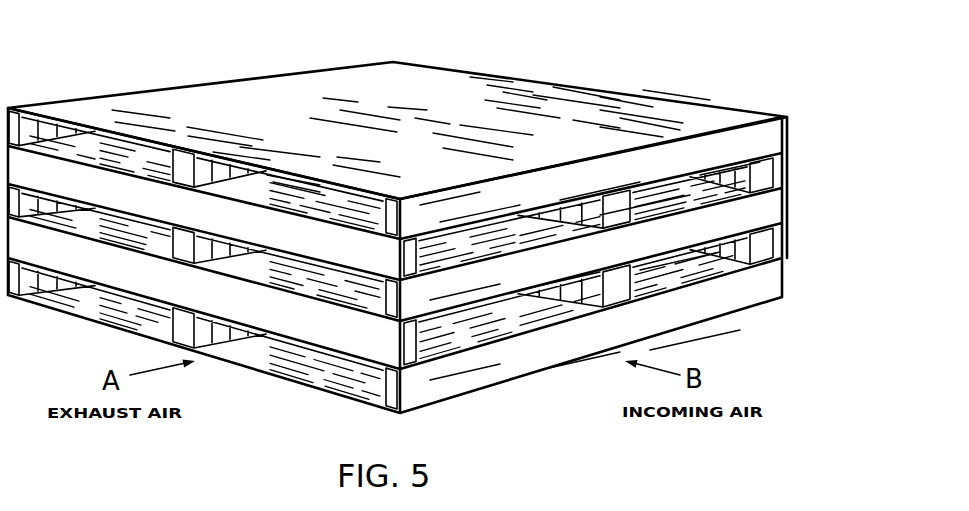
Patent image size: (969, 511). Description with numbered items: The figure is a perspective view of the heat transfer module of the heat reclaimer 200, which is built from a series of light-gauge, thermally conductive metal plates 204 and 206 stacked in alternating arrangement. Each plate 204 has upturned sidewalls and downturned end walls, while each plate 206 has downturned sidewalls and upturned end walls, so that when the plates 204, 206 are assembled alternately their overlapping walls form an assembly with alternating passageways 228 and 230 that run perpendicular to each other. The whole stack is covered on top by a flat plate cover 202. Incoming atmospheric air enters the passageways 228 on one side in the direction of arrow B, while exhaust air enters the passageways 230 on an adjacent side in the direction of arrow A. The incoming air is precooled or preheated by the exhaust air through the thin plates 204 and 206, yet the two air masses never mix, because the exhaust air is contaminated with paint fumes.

The heat reclaimer 200 is at (397, 215).
The flat plate cover 202 is at (242, 96).
The plate 204 is at (498, 236).
The plate 206 is at (97, 148).
The passageways 228 is at (672, 194).
The passageways 230 is at (313, 287).